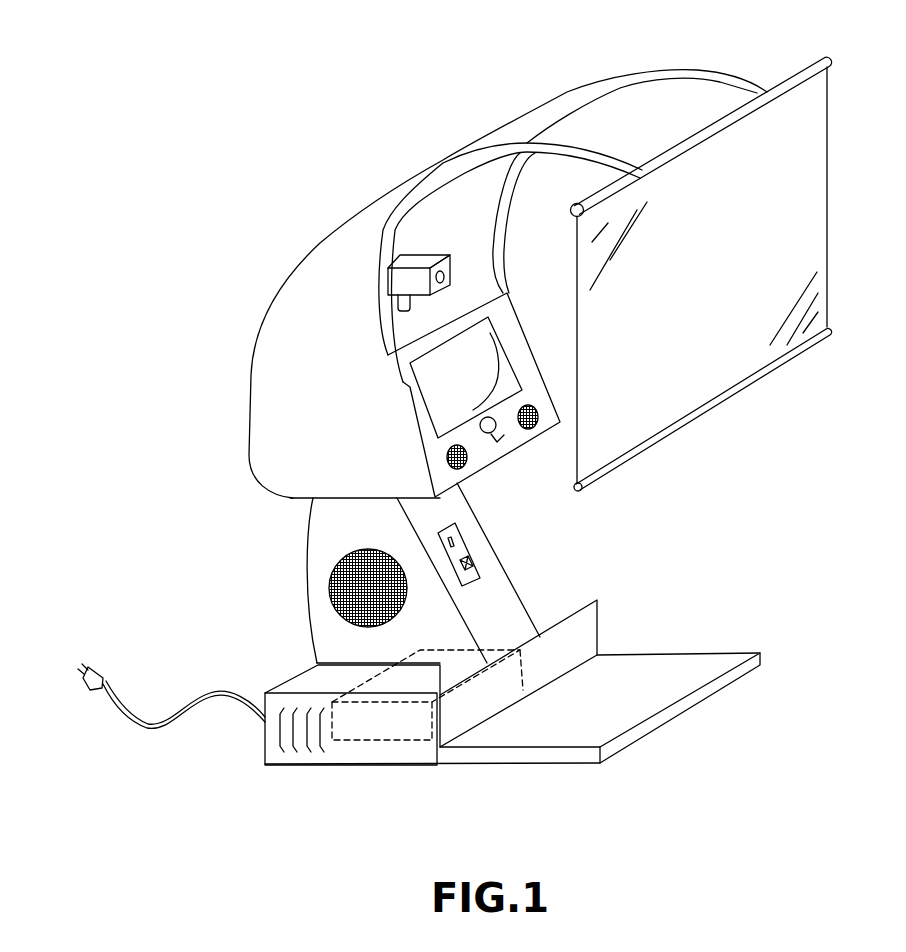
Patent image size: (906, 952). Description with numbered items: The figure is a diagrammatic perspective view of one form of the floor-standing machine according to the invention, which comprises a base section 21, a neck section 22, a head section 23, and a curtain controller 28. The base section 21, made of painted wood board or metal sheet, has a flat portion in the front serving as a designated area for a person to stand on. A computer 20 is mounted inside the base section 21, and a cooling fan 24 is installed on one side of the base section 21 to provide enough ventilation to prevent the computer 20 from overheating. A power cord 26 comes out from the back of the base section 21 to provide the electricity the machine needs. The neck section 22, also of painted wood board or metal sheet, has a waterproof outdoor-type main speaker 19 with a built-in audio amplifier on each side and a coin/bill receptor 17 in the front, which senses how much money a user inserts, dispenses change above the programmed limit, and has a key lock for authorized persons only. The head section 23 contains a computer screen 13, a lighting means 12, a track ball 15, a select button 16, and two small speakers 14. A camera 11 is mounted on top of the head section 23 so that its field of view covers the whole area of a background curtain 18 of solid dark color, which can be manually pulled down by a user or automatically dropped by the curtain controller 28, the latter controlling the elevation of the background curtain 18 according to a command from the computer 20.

The camera 11 is at (412, 270).
The lighting means 12 is at (520, 338).
The computer screen 13 is at (467, 343).
The small speakers 14 is at (447, 455).
The track ball 15 is at (500, 430).
The select button 16 is at (497, 434).
The coin/bill receptor 17 is at (463, 548).
The background curtain 18 is at (670, 381).
The main speaker 19 is at (330, 582).
The computer 20 is at (390, 723).
The base section 21 is at (583, 640).
The neck section 22 is at (307, 547).
The head section 23 is at (293, 403).
The cooling fan 24 is at (295, 737).
The power cord 26 is at (137, 725).
The curtain controller 28 is at (810, 72).